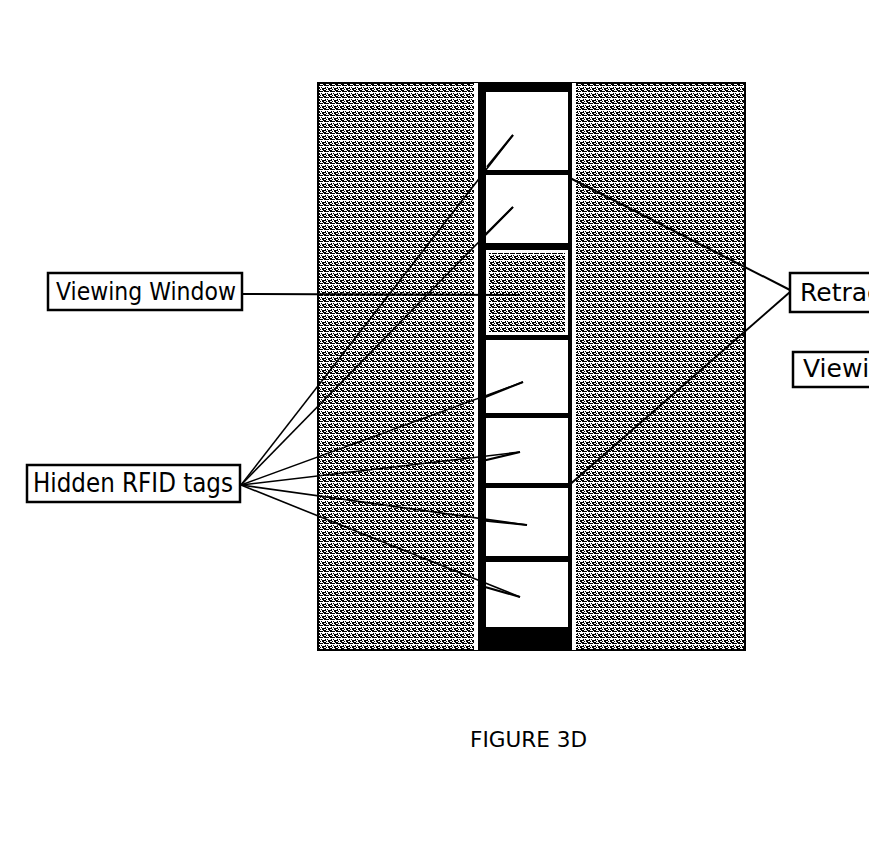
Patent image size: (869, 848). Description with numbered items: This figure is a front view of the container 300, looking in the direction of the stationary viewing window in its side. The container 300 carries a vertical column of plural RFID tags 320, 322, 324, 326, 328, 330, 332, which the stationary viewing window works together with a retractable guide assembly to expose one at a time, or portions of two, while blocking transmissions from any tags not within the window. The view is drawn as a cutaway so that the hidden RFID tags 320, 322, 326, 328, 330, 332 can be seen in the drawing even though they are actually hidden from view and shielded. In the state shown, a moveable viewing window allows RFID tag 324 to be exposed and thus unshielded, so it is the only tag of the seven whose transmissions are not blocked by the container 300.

The container 300 is at (743, 209).
The RFID tag 320 is at (548, 127).
The RFID tag 322 is at (548, 208).
The RFID tag 324 is at (567, 293).
The RFID tag 326 is at (553, 386).
The RFID tag 328 is at (553, 453).
The RFID tag 330 is at (550, 520).
The RFID tag 332 is at (552, 597).